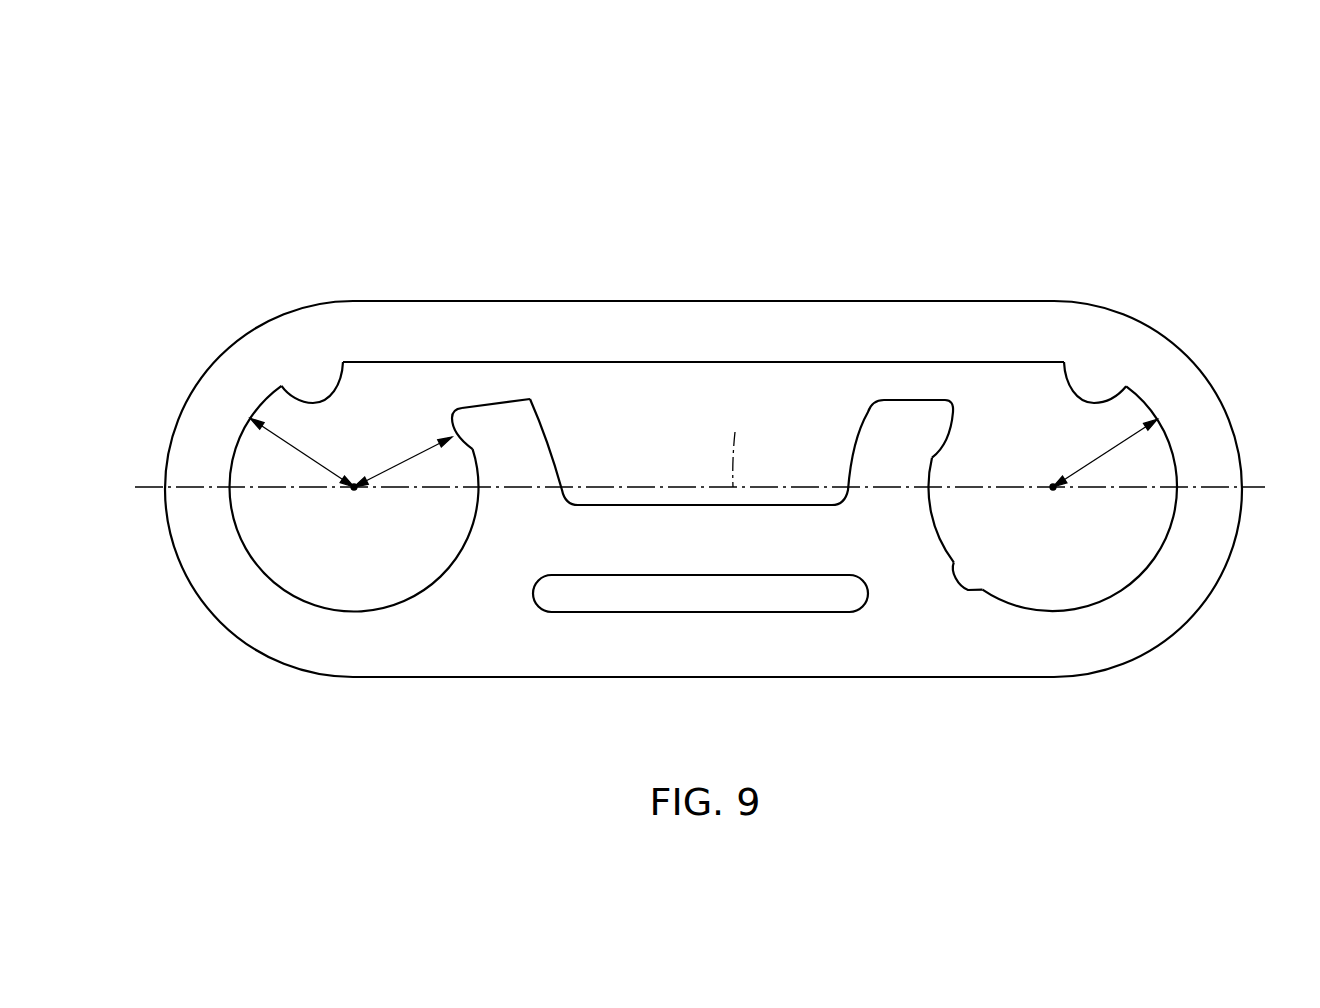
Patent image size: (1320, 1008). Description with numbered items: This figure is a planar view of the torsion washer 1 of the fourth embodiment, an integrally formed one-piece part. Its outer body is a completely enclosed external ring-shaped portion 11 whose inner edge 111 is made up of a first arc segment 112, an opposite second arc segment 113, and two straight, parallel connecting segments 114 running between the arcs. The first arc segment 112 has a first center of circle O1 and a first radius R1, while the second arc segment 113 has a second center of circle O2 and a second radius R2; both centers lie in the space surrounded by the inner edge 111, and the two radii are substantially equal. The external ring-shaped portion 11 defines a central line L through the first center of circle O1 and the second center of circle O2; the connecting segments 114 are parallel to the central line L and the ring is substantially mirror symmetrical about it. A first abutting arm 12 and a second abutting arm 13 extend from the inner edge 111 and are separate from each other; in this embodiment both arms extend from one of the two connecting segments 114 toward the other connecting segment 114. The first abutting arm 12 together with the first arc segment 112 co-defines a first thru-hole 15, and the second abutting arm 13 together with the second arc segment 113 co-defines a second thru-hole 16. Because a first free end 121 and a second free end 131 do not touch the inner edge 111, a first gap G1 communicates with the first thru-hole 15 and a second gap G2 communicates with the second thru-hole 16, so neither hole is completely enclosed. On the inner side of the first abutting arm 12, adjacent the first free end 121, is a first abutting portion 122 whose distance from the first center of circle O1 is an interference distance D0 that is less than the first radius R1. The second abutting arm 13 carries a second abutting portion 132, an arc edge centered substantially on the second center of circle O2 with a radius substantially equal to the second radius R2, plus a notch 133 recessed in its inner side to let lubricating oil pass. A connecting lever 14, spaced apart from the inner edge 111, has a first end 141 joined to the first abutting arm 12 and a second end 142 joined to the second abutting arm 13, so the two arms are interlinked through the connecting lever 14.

The torsion washer 1 is at (1247, 129).
The external ring-shaped portion 11 is at (745, 300).
The inner edge 111 is at (196, 118).
The first arc segment 112 is at (317, 403).
The second arc segment 113 is at (1093, 403).
The connecting segments 114 is at (676, 364).
The first abutting arm 12 is at (525, 256).
The first free end 121 is at (497, 403).
The first abutting portion 122 is at (450, 420).
The second abutting arm 13 is at (915, 256).
The second free end 131 is at (930, 400).
The second abutting portion 132 is at (935, 457).
The notch 133 is at (965, 578).
The connecting lever 14 is at (674, 512).
The first end 141 is at (563, 540).
The second end 142 is at (830, 540).
The first thru-hole 15 is at (279, 539).
The second thru-hole 16 is at (1129, 541).
The first gap G1 is at (515, 380).
The second gap G2 is at (908, 384).
The central line L is at (738, 444).
The first center of circle O1 is at (352, 492).
The second center of circle O2 is at (1055, 490).
The first radius R1 is at (302, 452).
The second radius R2 is at (1105, 451).
The interference distance D0 is at (403, 456).